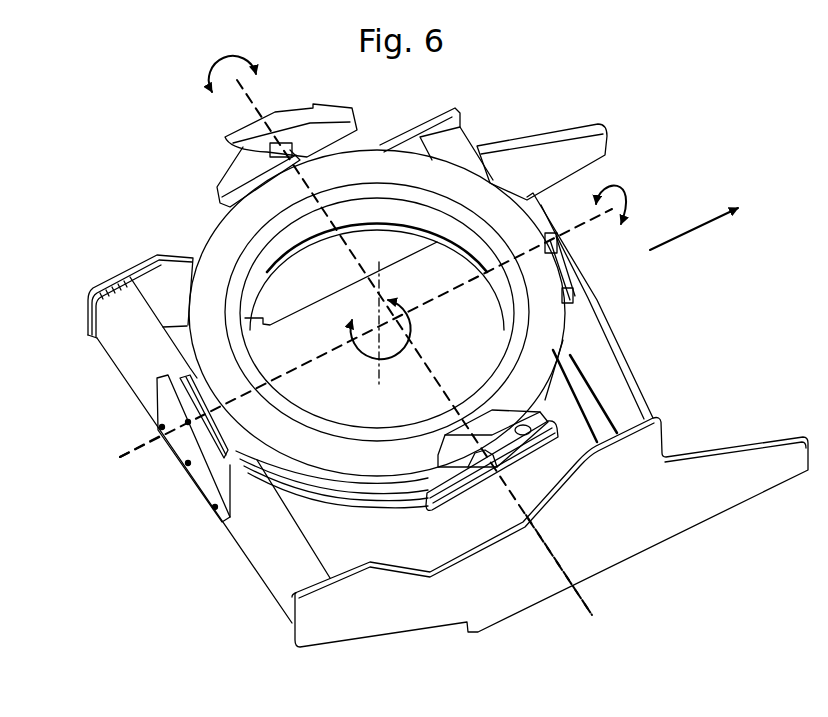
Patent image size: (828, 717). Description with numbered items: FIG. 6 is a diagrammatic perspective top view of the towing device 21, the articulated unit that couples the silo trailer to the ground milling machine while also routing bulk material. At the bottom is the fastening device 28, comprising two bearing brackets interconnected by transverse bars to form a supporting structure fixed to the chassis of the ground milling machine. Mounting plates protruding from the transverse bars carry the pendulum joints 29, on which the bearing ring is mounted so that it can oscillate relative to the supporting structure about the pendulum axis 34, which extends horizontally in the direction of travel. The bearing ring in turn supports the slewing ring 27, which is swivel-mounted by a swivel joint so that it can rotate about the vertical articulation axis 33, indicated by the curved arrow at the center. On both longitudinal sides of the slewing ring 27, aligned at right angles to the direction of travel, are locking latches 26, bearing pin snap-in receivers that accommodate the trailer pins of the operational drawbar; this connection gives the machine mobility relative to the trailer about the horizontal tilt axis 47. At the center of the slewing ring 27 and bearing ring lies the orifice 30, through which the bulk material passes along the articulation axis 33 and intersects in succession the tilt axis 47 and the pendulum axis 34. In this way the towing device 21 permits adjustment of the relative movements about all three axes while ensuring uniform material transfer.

The towing device 21 is at (115, 158).
The locking latch 26 is at (302, 137).
The slewing ring 27 is at (492, 193).
The fastening device 28 is at (640, 530).
The pendulum joint 29 is at (563, 263).
The orifice 30 is at (320, 342).
The articulation axis 33 is at (378, 362).
The pendulum axis 34 is at (157, 437).
The tilt axis 47 is at (553, 553).